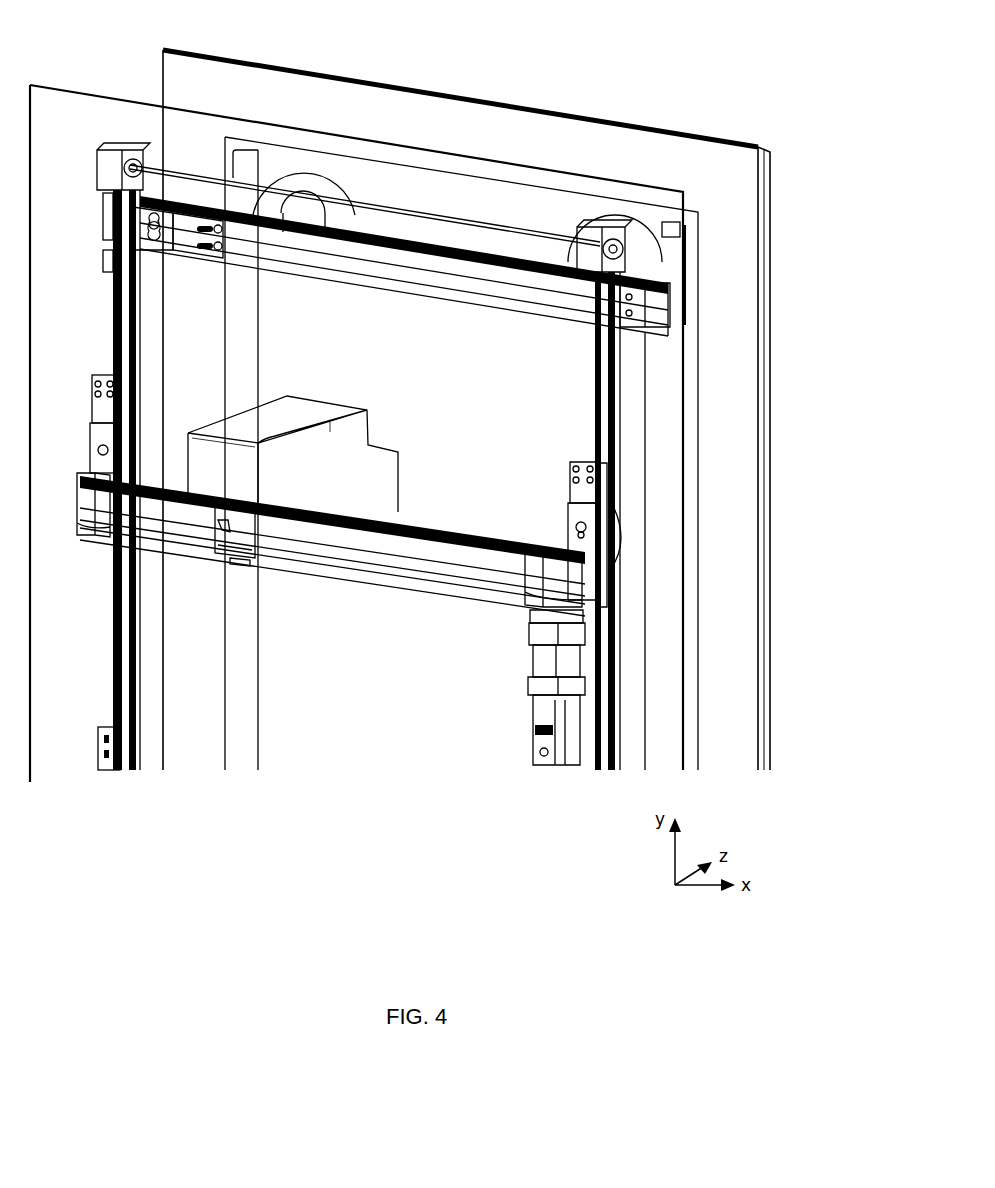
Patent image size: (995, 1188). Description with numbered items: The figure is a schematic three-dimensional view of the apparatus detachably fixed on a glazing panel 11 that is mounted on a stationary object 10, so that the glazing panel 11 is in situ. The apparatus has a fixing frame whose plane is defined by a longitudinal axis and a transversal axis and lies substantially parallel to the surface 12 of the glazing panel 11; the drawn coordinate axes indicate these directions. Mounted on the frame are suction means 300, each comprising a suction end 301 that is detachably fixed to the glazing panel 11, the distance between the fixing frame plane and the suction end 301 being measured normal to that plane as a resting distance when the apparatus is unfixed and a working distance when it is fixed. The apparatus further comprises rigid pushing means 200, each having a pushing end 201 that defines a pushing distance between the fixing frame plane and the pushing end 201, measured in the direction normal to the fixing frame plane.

The stationary object 10 is at (740, 162).
The glazing panel 11 is at (695, 358).
The surface 12 is at (640, 463).
The rigid pushing means 200 is at (655, 257).
The pushing end 201 is at (667, 235).
The suction means 300 is at (265, 200).
The suction end 301 is at (325, 185).